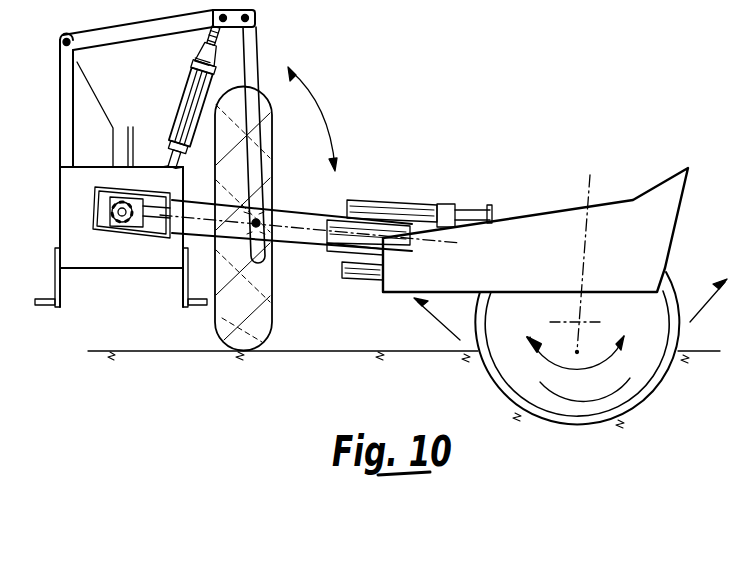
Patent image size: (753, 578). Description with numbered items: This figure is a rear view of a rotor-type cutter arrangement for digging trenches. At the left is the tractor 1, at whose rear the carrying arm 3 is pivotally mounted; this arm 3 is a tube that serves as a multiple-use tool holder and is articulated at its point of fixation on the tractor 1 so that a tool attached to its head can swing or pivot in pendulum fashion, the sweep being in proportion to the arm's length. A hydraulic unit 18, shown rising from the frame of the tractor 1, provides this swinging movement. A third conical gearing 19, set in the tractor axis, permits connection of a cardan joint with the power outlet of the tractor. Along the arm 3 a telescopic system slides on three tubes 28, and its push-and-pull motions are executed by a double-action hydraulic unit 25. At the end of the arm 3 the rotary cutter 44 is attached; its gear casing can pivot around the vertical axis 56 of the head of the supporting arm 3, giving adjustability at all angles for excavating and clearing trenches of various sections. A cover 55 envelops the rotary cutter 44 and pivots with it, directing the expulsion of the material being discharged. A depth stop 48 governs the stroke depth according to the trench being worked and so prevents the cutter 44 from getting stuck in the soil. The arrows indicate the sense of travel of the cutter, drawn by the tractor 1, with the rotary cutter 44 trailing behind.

The tractor 1 is at (102, 284).
The carrying arm 3 is at (290, 218).
The hydraulic unit 18 is at (190, 110).
The third conical gearing 19 is at (113, 224).
The double-action hydraulic unit 25 is at (334, 243).
The tubes 28 is at (393, 209).
The rotary cutter 44 is at (488, 387).
The depth stop 48 is at (658, 382).
The cover 55 is at (663, 222).
The vertical axis 56 is at (592, 180).